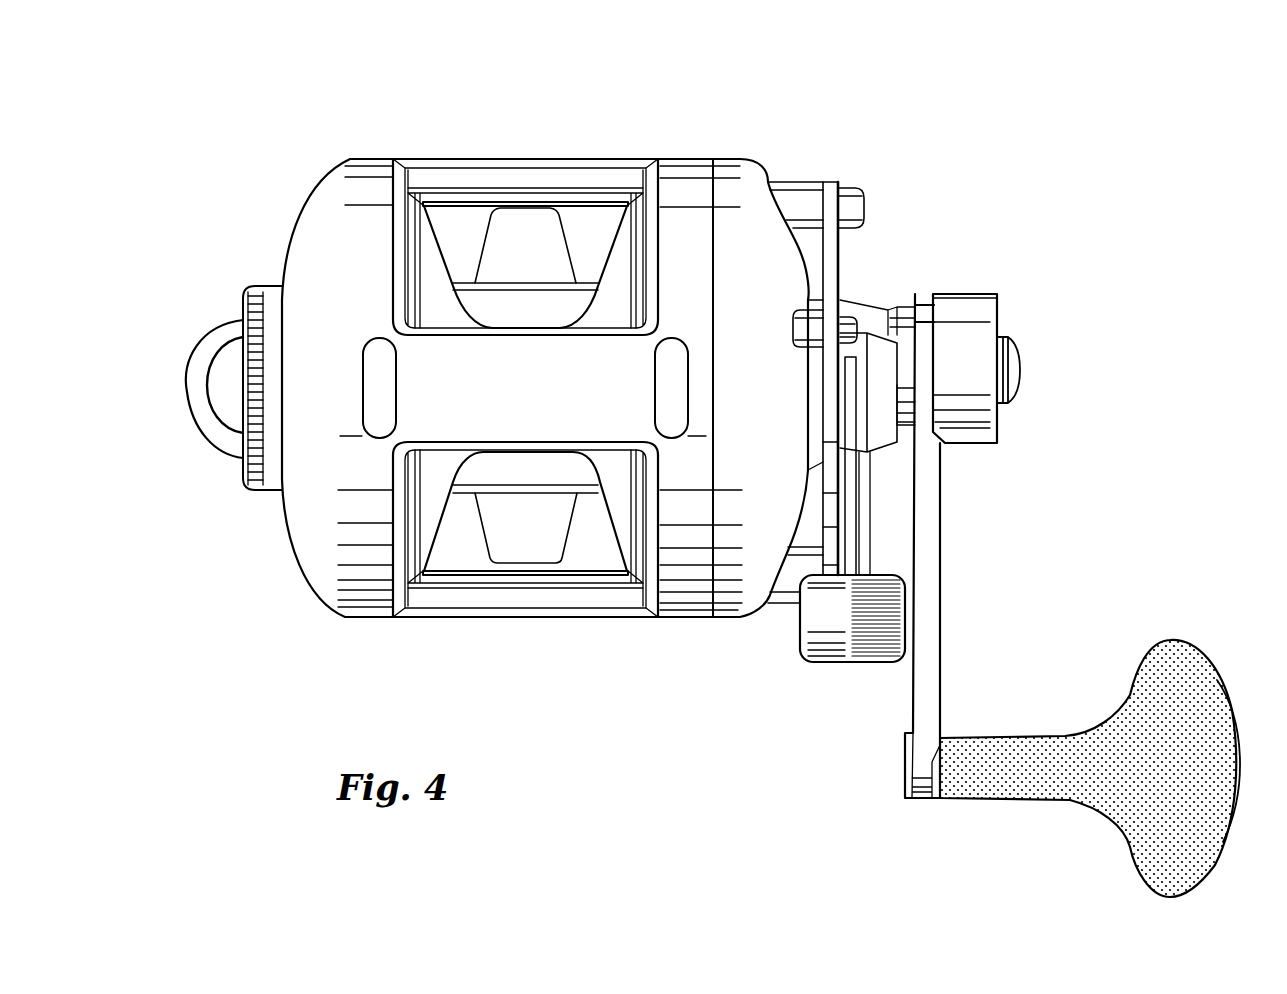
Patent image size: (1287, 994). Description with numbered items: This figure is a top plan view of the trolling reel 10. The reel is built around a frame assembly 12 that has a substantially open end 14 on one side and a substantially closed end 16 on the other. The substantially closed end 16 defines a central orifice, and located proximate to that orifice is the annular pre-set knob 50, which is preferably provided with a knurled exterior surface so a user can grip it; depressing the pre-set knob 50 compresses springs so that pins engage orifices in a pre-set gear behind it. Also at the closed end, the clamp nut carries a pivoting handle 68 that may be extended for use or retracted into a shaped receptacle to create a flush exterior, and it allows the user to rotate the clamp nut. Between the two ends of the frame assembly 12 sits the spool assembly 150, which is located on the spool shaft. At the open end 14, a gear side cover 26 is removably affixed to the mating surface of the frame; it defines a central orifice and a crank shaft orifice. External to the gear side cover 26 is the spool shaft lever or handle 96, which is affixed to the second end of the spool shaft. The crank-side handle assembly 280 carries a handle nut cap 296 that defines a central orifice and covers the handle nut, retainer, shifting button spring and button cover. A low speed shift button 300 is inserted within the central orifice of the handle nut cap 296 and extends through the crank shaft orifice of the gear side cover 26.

The trolling reel 10 is at (300, 148).
The frame assembly 12 is at (681, 197).
The substantially open end 14 is at (770, 163).
The substantially closed end 16 is at (292, 193).
The gear side cover 26 is at (763, 550).
The annular pre-set knob 50 is at (250, 291).
The pivoting handle 68 is at (195, 388).
The spool shaft lever 96 is at (823, 642).
The spool assembly 150 is at (613, 507).
The handle assembly 280 is at (935, 600).
The handle nut cap 296 is at (972, 305).
The low speed shift button 300 is at (1020, 357).